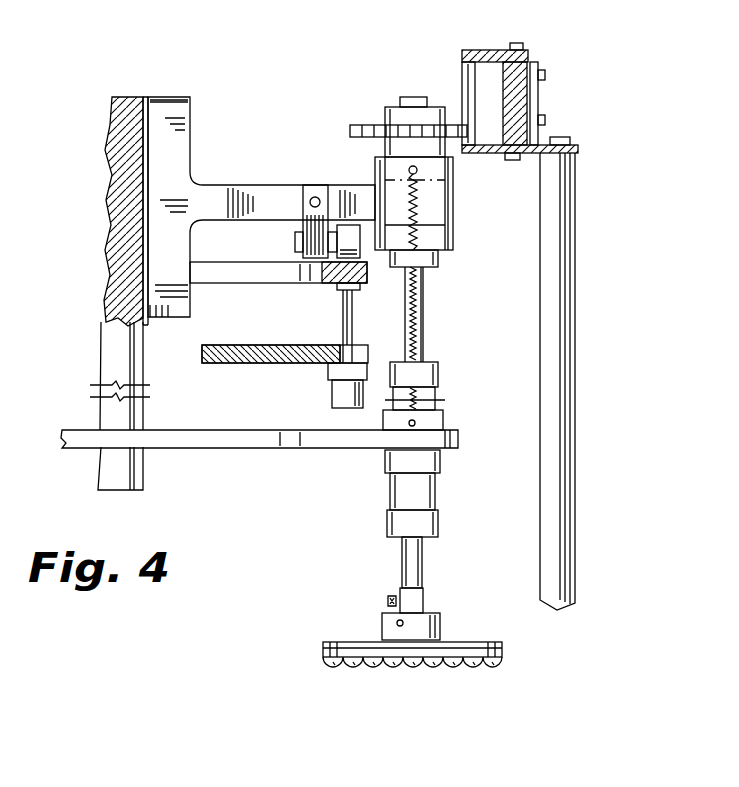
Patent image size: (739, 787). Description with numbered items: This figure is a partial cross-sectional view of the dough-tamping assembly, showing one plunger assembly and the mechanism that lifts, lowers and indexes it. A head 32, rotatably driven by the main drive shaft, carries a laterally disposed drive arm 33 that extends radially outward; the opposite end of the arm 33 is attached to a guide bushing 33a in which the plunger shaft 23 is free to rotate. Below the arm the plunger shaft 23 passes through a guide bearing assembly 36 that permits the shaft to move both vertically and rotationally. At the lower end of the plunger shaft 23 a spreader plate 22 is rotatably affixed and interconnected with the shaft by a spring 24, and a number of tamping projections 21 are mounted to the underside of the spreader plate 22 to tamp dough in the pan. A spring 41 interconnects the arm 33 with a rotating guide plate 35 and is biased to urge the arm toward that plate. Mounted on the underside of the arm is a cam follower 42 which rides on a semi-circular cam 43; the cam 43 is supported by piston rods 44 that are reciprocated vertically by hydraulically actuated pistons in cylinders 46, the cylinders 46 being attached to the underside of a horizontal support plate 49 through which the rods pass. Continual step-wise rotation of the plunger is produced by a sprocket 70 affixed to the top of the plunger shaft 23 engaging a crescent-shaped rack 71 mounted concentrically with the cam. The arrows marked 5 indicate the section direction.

The head 32 is at (128, 108).
The drive arm 33 is at (233, 190).
The guide bushing 33a is at (453, 212).
The sprocket 70 is at (455, 124).
The rack 71 is at (467, 80).
The cam follower 42 is at (358, 258).
The cam 43 is at (260, 283).
The piston rod 44 is at (343, 321).
The support plate 49 is at (247, 365).
The cylinder 46 is at (332, 395).
The spring 41 is at (425, 310).
The section line 5 is at (425, 297).
The rotating guide plate 35 is at (303, 450).
The guide bearing assembly 36 is at (440, 460).
The plunger shaft 23 is at (425, 562).
The spring 24 is at (386, 600).
The tamping projections 21 is at (335, 663).
The spreader plate 22 is at (400, 673).